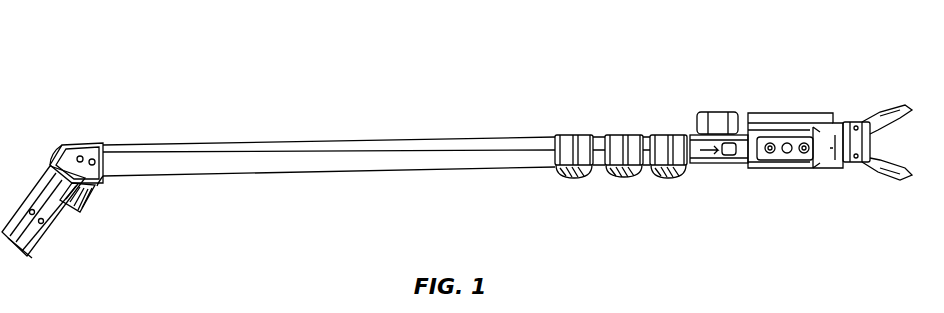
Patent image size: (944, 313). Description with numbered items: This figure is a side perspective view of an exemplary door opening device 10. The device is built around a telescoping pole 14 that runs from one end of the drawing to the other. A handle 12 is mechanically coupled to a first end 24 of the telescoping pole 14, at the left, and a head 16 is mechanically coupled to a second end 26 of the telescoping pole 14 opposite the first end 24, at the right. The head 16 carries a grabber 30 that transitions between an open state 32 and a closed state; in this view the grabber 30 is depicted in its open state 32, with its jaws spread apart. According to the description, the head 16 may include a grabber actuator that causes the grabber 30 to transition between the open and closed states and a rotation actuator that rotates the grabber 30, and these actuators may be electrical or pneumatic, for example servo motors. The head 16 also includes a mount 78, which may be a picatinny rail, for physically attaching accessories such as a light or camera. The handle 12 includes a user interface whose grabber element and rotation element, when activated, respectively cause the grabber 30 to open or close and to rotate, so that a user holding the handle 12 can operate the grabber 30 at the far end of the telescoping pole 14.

The door opening device 10 is at (60, 44).
The handle 12 is at (55, 210).
The telescoping pole 14 is at (476, 138).
The head 16 is at (818, 113).
The first end 24 is at (106, 143).
The second end 26 is at (688, 132).
The grabber 30 is at (872, 118).
The open state 32 is at (867, 184).
The mount 78 is at (777, 152).